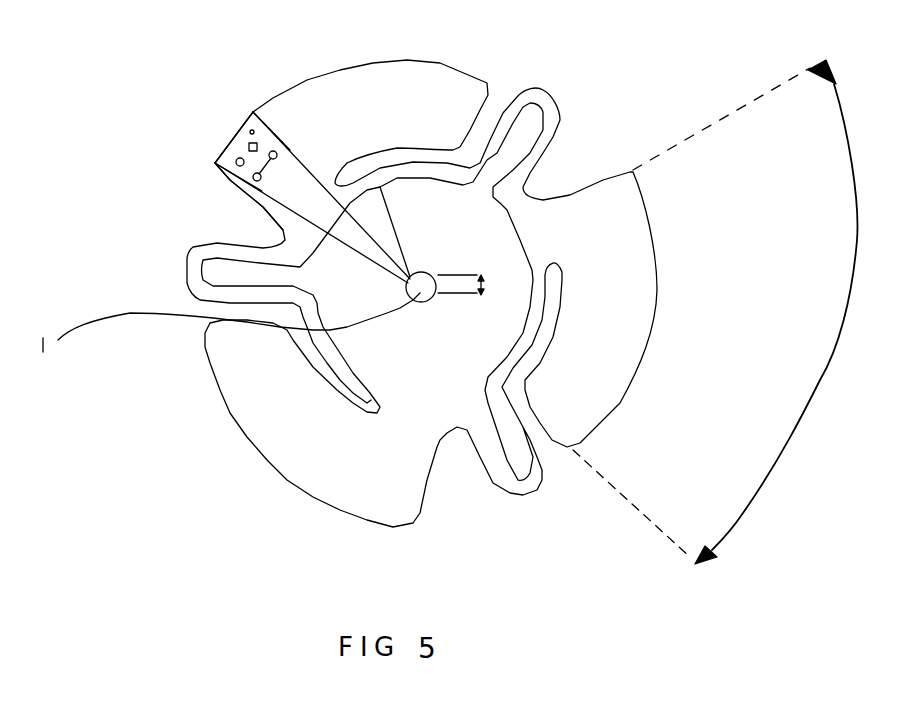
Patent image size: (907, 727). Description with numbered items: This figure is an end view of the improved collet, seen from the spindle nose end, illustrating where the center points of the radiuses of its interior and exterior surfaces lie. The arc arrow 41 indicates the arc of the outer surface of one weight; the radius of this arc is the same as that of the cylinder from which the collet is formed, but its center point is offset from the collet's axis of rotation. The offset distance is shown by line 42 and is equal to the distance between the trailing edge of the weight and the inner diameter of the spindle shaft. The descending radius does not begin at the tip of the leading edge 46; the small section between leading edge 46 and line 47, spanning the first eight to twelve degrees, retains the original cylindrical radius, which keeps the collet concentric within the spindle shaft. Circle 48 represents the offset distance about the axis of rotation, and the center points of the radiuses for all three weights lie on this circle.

The arc arrow 41 is at (807, 410).
The line 42 is at (487, 280).
The leading edge 46 is at (215, 163).
The line 47 is at (276, 154).
The circle 48 is at (420, 307).